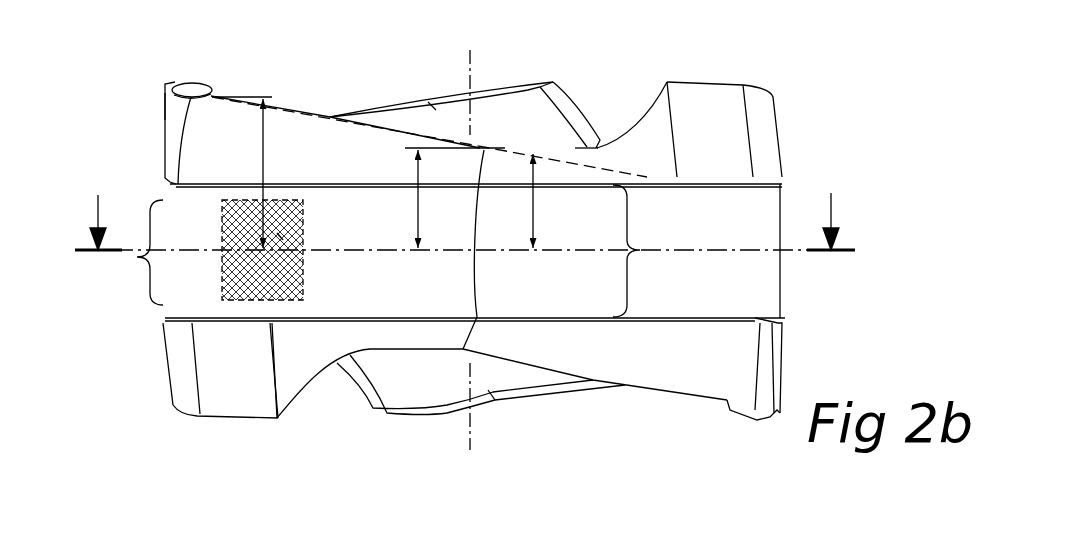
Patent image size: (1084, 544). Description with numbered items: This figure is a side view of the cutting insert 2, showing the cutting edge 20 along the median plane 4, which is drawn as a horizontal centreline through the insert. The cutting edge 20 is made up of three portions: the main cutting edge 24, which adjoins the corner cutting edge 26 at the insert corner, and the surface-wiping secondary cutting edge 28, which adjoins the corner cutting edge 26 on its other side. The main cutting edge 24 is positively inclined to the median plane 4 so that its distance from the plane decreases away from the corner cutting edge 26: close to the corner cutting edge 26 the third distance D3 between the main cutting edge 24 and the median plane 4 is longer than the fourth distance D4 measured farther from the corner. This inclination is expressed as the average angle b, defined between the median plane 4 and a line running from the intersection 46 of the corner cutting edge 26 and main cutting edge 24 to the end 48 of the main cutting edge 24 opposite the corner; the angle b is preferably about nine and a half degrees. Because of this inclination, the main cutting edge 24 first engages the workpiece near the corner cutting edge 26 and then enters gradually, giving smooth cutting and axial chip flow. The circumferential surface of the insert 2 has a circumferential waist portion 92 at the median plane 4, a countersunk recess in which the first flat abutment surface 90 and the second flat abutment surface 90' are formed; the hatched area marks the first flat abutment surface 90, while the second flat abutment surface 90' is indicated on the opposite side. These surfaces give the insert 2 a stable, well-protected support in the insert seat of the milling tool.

The cutting insert 2 is at (457, 256).
The median plane 4 is at (465, 206).
The cutting edge 20 is at (140, 80).
The main cutting edge 24 is at (331, 113).
The corner cutting edge 26 is at (168, 98).
The surface-wiping secondary cutting edge 28 is at (176, 82).
The intersection 46 is at (190, 88).
The end of the main cutting edge 48 is at (484, 148).
The first flat abutment surface 90 is at (262, 250).
The second flat abutment surface 90' is at (127, 269).
The circumferential waist portion 92 is at (643, 253).
The third distance D3 is at (263, 175).
The fourth distance D4 is at (416, 204).
The average angle b is at (538, 205).